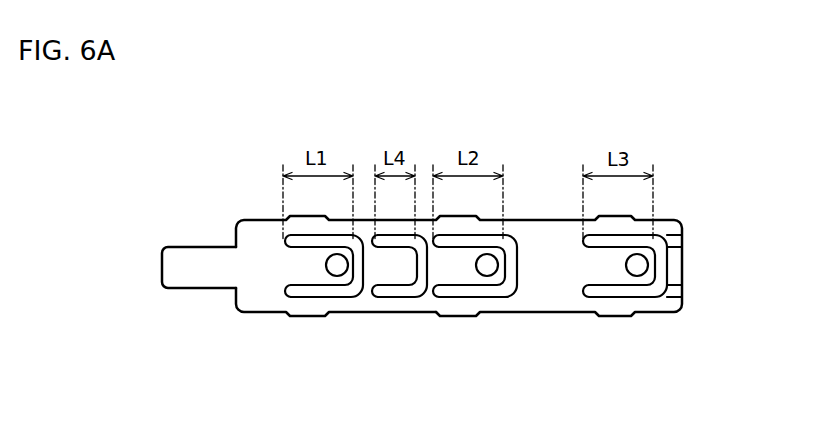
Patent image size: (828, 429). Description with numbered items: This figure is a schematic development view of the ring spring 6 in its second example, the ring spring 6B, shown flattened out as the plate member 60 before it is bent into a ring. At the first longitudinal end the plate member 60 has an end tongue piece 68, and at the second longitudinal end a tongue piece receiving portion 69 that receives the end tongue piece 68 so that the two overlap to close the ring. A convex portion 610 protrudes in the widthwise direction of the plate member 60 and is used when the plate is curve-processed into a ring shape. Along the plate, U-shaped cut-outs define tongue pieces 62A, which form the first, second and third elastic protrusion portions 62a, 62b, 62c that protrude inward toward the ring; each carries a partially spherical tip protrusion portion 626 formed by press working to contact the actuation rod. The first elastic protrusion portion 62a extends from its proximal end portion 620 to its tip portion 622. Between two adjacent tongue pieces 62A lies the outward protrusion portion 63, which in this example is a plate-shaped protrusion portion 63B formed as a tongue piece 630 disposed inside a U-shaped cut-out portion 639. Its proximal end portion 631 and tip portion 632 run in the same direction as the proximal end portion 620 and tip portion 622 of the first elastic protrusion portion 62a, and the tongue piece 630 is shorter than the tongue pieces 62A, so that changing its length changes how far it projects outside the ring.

The ring spring 6 is at (440, 244).
The ring spring of the second example 6B is at (200, 94).
The plate member 60 is at (543, 233).
The end tongue piece 68 is at (185, 272).
The tongue piece receiving portion 69 is at (678, 272).
The convex portion 610 is at (297, 320).
The proximal end portion 620 is at (285, 263).
The tip portion 622 is at (358, 293).
The tip protrusion portion 626 is at (639, 264).
The tongue piece 62A is at (489, 308).
The first elastic protrusion portion 62a is at (303, 327).
The second elastic protrusion portion 62b is at (484, 323).
The third elastic protrusion portion 62c is at (648, 306).
The outward protrusion portion 63 is at (399, 252).
The plate-shaped protrusion portion 63B is at (399, 252).
The tongue piece 630 is at (388, 266).
The proximal end portion 631 is at (378, 275).
The tip portion 632 is at (402, 272).
The U-shaped cut-out portion 639 is at (422, 233).